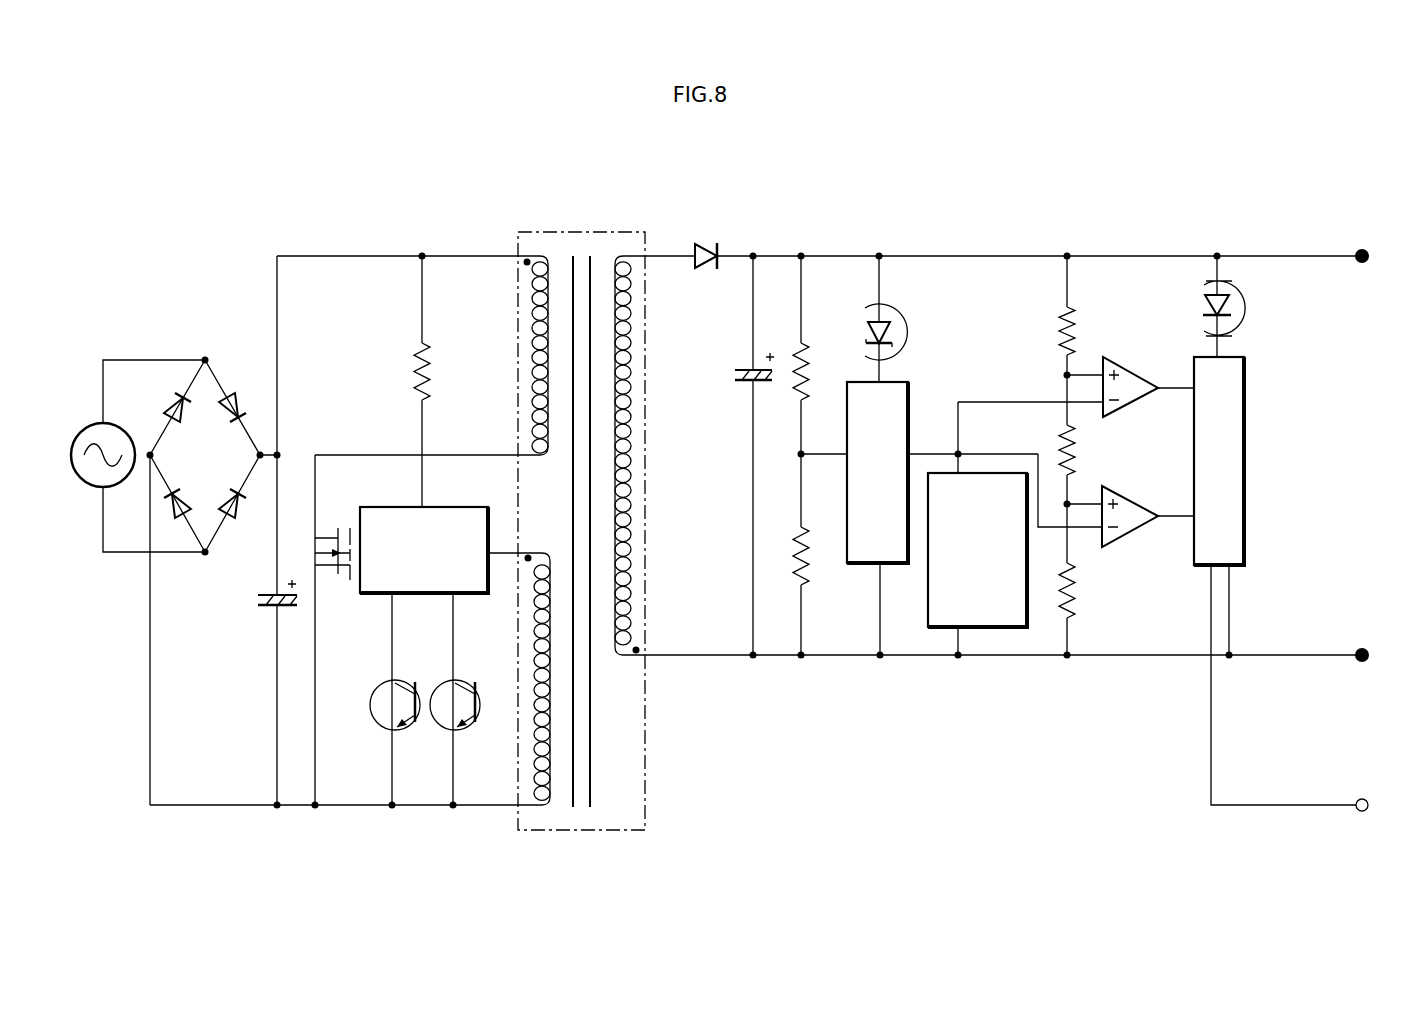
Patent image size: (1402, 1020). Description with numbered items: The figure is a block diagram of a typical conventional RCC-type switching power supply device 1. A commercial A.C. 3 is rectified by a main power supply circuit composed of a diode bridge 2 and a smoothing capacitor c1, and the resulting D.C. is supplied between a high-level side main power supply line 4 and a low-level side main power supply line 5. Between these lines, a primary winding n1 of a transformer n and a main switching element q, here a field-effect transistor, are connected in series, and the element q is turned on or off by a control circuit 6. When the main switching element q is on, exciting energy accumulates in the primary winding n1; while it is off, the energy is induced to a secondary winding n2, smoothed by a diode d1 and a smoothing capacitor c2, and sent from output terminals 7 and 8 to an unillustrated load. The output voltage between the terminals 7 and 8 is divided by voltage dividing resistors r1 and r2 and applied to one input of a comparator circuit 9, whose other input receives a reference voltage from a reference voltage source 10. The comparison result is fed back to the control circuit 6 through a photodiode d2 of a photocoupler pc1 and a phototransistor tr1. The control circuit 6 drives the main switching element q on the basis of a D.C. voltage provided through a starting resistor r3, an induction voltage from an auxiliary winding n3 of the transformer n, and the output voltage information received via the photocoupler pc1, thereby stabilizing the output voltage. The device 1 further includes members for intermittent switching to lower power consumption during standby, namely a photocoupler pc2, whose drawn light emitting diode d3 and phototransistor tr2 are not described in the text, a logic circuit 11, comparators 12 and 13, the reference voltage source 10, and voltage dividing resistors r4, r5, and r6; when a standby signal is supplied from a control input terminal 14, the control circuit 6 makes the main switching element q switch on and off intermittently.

The switching power supply device 1 is at (192, 218).
The diode bridge 2 is at (236, 361).
The commercial A.C. 3 is at (96, 424).
The main power supply line 4 is at (354, 255).
The main power supply line 5 is at (237, 806).
The control circuit 6 is at (475, 507).
The output terminal 7 is at (1352, 270).
The output terminal 8 is at (1360, 664).
The comparator circuit 9 is at (912, 389).
The reference voltage source 10 is at (975, 629).
The logic circuit 11 is at (1246, 490).
The comparator 12 is at (1142, 372).
The comparator 13 is at (1142, 500).
The control input terminal 14 is at (1362, 814).
The transformer n is at (584, 502).
The primary winding n1 is at (532, 350).
The secondary winding n2 is at (636, 538).
The auxiliary winding n3 is at (532, 606).
The diode d1 is at (712, 248).
The photodiode d2 is at (868, 338).
The light emitting diode of photocoupler pc2 d3 is at (1205, 300).
The smoothing capacitor c1 is at (258, 602).
The smoothing capacitor c2 is at (740, 368).
The voltage dividing resistor r1 is at (795, 396).
The voltage dividing resistor r2 is at (797, 533).
The starting resistor r3 is at (414, 365).
The voltage dividing resistor r4 is at (1080, 313).
The voltage dividing resistor r5 is at (1080, 430).
The voltage dividing resistor r6 is at (1080, 562).
The main switching element q is at (352, 578).
The phototransistor tr1 is at (414, 685).
The phototransistor of photocoupler pc2 tr2 is at (474, 685).
The photocoupler pc1 is at (626, 520).
The photocoupler pc2 is at (852, 521).